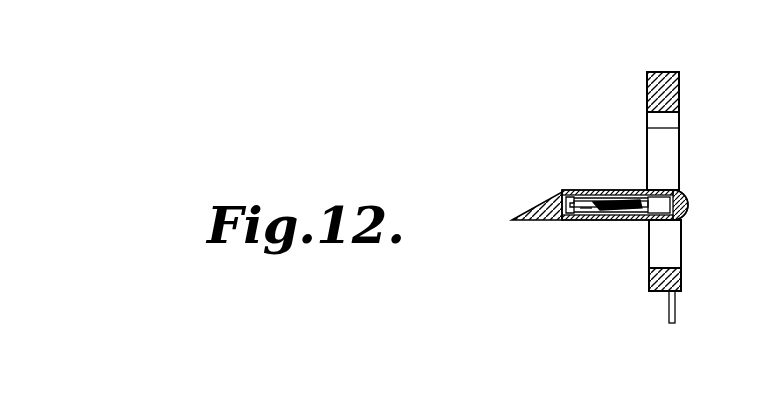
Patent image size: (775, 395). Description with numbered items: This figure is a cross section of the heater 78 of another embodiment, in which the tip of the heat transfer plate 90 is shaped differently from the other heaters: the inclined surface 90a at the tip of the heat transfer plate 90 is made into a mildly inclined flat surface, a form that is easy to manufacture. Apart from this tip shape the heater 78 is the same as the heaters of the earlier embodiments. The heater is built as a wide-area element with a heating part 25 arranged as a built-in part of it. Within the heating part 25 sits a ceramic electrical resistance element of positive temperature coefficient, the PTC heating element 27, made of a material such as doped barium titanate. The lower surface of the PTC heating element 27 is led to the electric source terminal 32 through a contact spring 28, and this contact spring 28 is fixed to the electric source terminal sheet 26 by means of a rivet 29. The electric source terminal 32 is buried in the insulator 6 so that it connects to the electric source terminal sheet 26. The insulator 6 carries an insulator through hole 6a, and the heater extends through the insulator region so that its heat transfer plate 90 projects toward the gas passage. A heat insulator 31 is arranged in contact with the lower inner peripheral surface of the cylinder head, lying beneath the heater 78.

The insulator 6 is at (662, 101).
The insulator through hole 6a is at (668, 170).
The heating part 25 is at (622, 189).
The electric source terminal sheet 26 is at (607, 221).
The PTC heating element 27 is at (562, 192).
The contact spring 28 is at (588, 191).
The rivet 29 is at (637, 221).
The heat insulator 31 is at (587, 221).
The electric source terminal 32 is at (675, 305).
The heater 78 is at (572, 175).
The heat transfer plate 90 is at (601, 191).
The inclined surface 90a is at (535, 212).